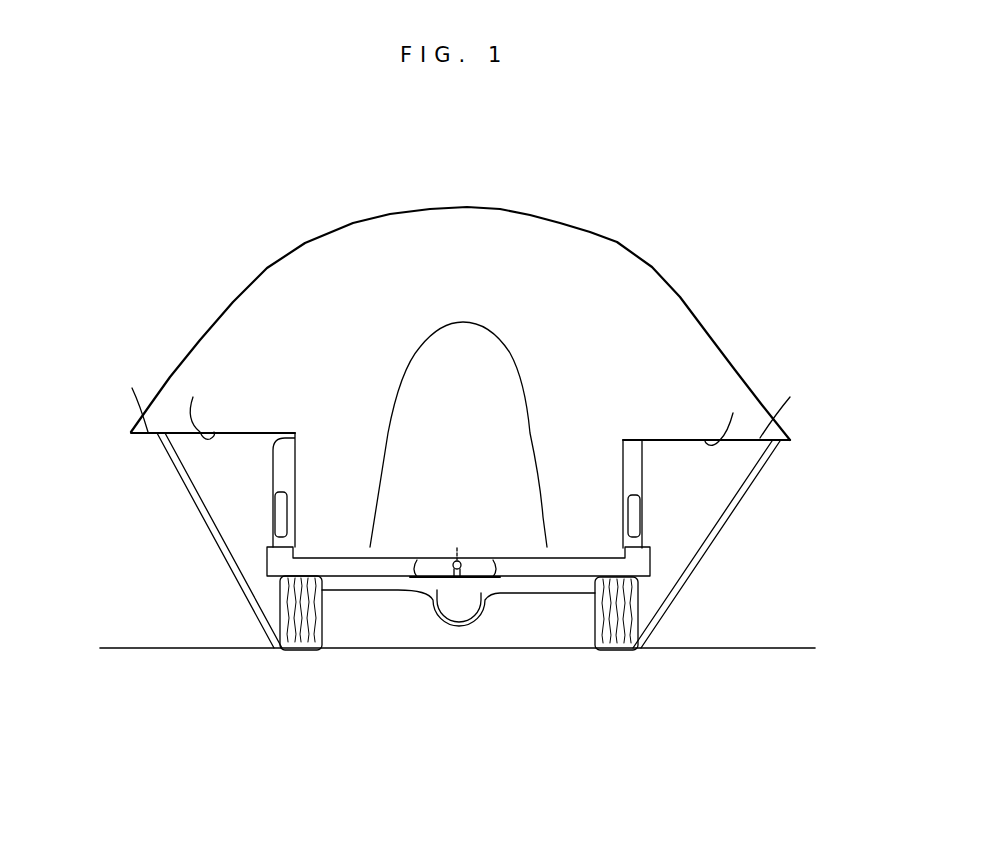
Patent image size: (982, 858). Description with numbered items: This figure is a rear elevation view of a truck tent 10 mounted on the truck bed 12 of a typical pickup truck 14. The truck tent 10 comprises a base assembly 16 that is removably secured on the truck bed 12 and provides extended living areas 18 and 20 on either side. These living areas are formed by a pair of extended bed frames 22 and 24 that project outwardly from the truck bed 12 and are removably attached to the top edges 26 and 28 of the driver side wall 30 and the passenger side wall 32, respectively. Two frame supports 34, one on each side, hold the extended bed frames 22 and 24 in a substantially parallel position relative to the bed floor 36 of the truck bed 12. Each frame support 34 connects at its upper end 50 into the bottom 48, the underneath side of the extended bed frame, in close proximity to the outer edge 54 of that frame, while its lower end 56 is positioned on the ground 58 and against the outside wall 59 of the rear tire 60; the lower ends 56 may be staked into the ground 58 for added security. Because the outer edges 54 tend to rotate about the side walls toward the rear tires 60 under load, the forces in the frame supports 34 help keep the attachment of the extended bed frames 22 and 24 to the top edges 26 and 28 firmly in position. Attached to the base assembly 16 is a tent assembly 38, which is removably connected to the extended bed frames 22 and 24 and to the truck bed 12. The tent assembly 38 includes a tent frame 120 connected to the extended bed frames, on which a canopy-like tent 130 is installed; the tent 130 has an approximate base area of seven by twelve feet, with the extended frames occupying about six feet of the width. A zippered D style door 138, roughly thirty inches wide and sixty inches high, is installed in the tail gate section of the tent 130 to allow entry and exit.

The truck tent 10 is at (727, 148).
The truck bed 12 is at (488, 516).
The pickup truck 14 is at (712, 502).
The base assembly 16 is at (114, 422).
The extended living area 18 is at (264, 373).
The extended living area 20 is at (687, 377).
The extended bed frame 22 is at (247, 438).
The extended bed frame 24 is at (740, 443).
The top edge of driver side wall 26 is at (290, 432).
The top edge of passenger side wall 28 is at (632, 438).
The driver side wall 30 is at (275, 482).
The passenger side wall 32 is at (643, 483).
The frame support 34 is at (232, 560).
The bed floor 36 is at (408, 545).
The tent assembly 38 is at (586, 176).
The bottom 48 is at (461, 409).
The upper end 50 is at (163, 447).
The outer edge 54 is at (466, 399).
The lower end 56 is at (267, 647).
The ground 58 is at (143, 647).
The outside wall of rear tire 59 is at (277, 602).
The rear tire 60 is at (300, 653).
The tent frame 120 is at (322, 201).
The canopy-like tent 130 is at (485, 270).
The zippered D style door 138 is at (477, 328).